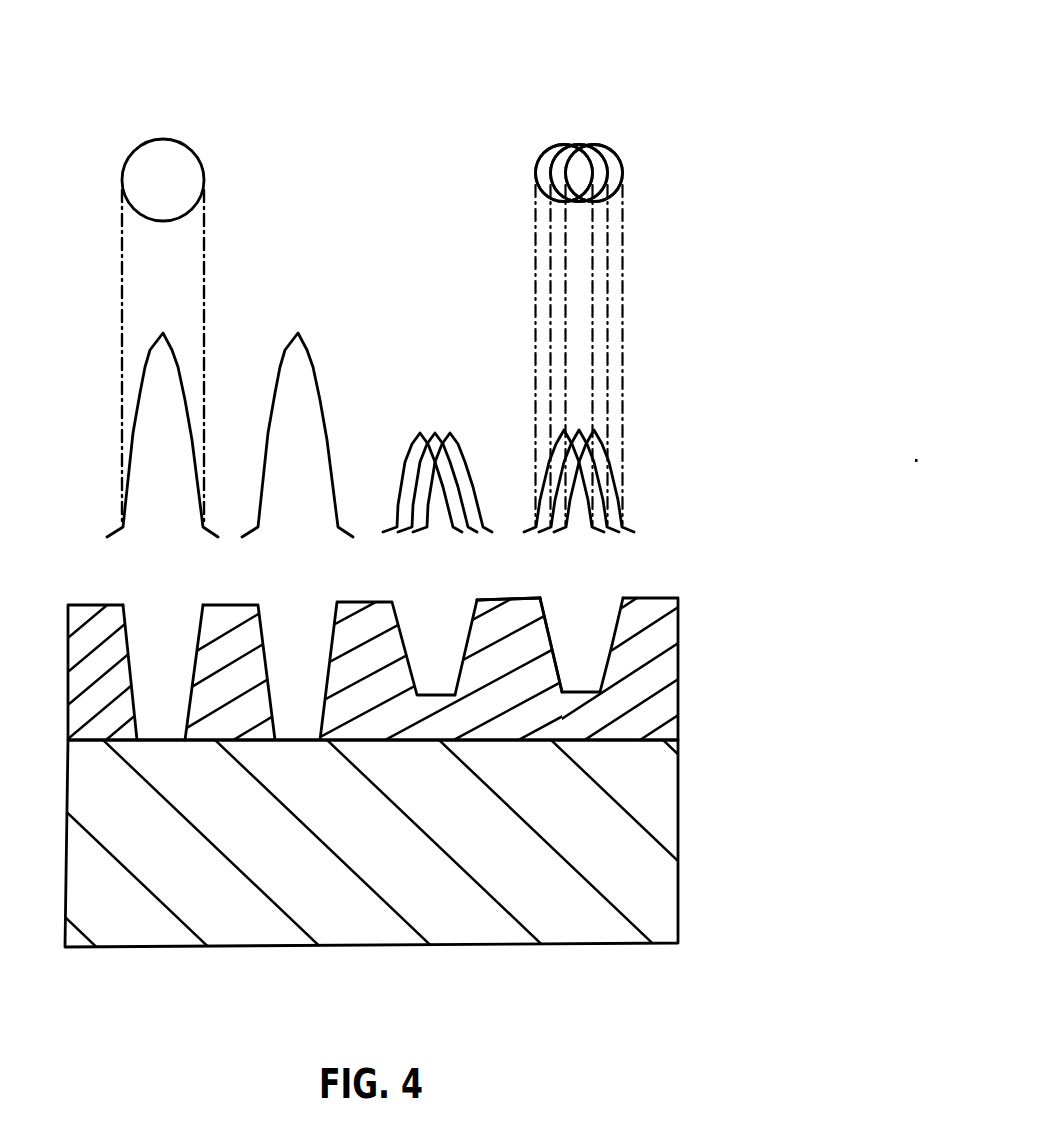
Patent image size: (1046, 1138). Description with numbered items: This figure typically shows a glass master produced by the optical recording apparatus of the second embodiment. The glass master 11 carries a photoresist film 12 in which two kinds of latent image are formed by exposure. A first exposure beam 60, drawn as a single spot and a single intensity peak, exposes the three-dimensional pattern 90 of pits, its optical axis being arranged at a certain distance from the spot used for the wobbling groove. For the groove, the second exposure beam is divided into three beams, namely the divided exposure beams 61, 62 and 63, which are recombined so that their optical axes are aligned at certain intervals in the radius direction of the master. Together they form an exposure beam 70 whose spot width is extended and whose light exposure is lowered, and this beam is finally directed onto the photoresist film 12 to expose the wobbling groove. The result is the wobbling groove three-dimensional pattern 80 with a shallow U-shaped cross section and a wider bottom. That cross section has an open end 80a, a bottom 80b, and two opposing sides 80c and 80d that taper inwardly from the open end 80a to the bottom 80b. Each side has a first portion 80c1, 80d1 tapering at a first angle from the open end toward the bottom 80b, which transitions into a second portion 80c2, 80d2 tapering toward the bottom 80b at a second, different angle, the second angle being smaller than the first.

The substrate 11 is at (665, 795).
The photoresist film 12 is at (663, 663).
The first exposure beam 60 is at (140, 152).
The 2-1 exposure beam 61 is at (413, 438).
The 2-2 exposure beam 62 is at (438, 432).
The 2-3 exposure beam 63 is at (458, 438).
The exposure beam 70 is at (645, 60).
The wobbling groove three-dimensional pattern 80 is at (670, 655).
The open end 80a is at (659, 566).
The bottom 80b is at (598, 695).
The opposing side 80c is at (670, 659).
The first portion 80c1 is at (615, 633).
The second portion 80c2 is at (465, 667).
The opposing side 80d is at (457, 614).
The first portion 80d1 is at (547, 632).
The second portion 80d2 is at (462, 667).
The three-dimensional pattern of pits 90 is at (123, 596).